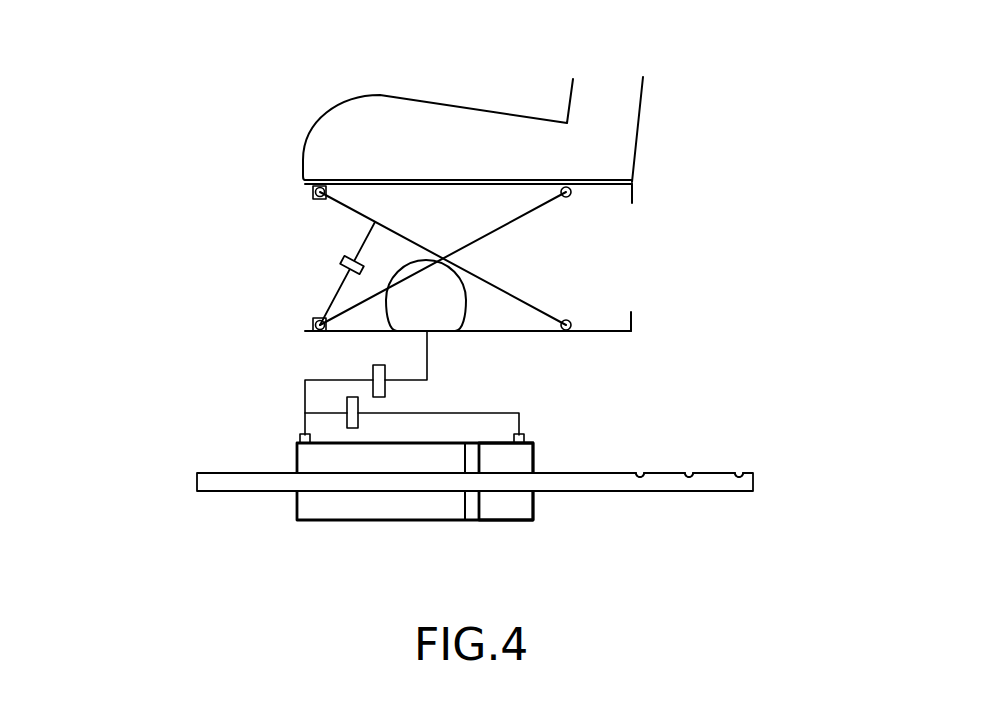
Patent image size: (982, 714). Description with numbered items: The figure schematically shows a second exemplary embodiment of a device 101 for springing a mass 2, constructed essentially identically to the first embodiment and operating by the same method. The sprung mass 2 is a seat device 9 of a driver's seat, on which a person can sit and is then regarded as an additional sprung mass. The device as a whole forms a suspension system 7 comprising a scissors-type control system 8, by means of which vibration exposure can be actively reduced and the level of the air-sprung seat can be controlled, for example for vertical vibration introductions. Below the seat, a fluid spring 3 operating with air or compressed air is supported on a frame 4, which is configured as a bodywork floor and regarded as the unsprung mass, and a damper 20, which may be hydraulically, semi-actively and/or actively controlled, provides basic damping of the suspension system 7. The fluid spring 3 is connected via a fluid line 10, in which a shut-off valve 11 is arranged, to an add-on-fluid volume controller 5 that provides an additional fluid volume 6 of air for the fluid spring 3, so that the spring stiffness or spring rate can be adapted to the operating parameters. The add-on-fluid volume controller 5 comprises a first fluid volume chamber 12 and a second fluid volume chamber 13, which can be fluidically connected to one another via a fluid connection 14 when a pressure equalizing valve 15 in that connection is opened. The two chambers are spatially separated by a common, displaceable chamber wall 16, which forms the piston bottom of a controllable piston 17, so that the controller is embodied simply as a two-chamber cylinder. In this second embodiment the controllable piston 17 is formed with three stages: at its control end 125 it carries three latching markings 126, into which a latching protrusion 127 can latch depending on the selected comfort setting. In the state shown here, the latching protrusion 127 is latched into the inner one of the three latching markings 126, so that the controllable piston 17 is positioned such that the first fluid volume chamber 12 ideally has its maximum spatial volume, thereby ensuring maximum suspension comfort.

The device for springing a mass 101 is at (728, 71).
The mass 2 is at (292, 153).
The seat device 9 is at (610, 126).
The suspension system 7 is at (149, 261).
The scissors-type control system 8 is at (470, 222).
The damper 20 is at (345, 262).
The fluid spring 3 is at (445, 296).
The frame 4 is at (598, 332).
The fluid line 10 is at (305, 400).
The shut-off valve 11 is at (373, 370).
The pressure equalizing valve 15 is at (358, 407).
The fluid connection 14 is at (497, 413).
The add-on-fluid volume controller 5 is at (140, 470).
The additional fluid volume 6 is at (285, 558).
The first fluid volume chamber 12 is at (325, 503).
The second fluid volume chamber 13 is at (503, 503).
The displaceable chamber wall 16 is at (472, 508).
The controllable piston 17 is at (205, 481).
The control end 125 is at (690, 522).
The latching markings 126 is at (768, 453).
The latching protrusion 127 is at (640, 471).